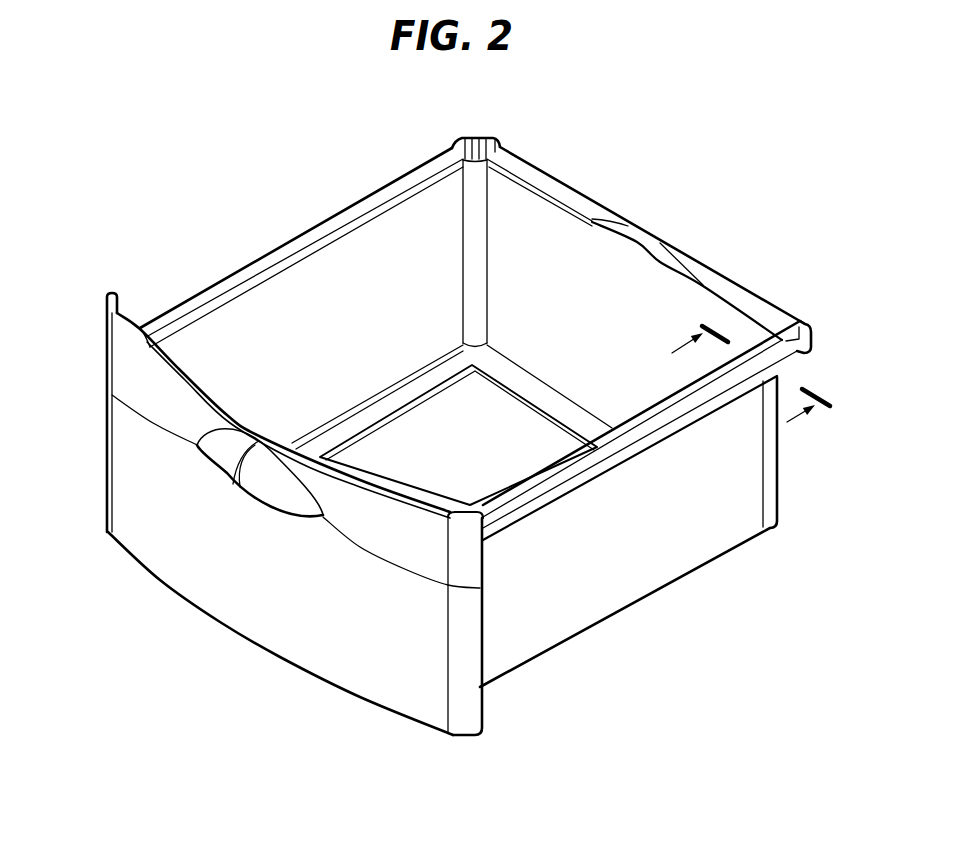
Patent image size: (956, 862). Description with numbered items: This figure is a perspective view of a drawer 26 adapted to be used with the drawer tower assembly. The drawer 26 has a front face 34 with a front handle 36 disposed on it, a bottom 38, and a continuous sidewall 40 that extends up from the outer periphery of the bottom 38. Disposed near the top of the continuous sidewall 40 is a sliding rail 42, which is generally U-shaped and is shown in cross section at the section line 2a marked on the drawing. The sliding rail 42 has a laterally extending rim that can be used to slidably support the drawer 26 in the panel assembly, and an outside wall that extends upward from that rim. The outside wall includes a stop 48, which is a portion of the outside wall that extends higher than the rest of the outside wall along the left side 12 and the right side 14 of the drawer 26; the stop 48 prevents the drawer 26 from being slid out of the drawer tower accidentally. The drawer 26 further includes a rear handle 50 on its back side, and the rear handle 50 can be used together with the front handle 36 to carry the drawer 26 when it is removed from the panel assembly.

The left side 12 is at (237, 198).
The right side 14 is at (651, 668).
The drawer 26 is at (107, 530).
The front face 34 is at (132, 369).
The front handle 36 is at (220, 456).
The bottom 38 is at (500, 682).
The continuous sidewall 40 is at (695, 537).
The sliding rail 42 is at (708, 428).
The stop 48 is at (447, 152).
The rear handle 50 is at (637, 224).
The section line 2a is at (755, 377).